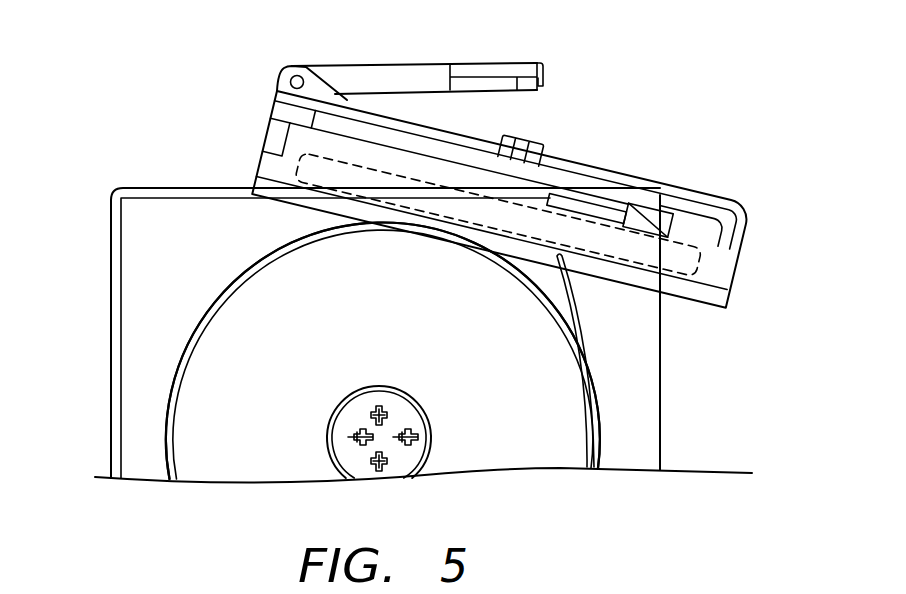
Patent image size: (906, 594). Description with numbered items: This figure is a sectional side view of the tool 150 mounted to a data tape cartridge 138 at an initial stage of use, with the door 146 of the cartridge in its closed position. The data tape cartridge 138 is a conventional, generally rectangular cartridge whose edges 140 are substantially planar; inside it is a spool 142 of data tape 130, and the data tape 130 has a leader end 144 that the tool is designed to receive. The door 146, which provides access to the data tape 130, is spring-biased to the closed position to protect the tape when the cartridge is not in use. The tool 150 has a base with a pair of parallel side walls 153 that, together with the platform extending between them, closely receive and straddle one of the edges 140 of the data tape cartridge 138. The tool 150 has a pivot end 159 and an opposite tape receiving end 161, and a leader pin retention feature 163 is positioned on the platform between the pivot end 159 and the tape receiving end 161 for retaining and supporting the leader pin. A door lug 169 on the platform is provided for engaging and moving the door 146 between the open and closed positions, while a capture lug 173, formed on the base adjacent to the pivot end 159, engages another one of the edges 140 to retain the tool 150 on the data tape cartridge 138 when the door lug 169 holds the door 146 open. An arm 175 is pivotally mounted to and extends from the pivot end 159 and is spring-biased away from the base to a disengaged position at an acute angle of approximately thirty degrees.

The data tape 130 is at (226, 291).
The data tape cartridge 138 is at (112, 326).
The edges 140 is at (154, 188).
The spool 142 is at (278, 274).
The leader end 144 is at (566, 300).
The door 146 is at (633, 200).
The tool 150 is at (510, 162).
The side walls 153 is at (262, 188).
The pivot end 159 is at (289, 71).
The tape receiving end 161 is at (748, 230).
The leader pin retention feature 163 is at (540, 149).
The door lug 169 is at (668, 207).
The capture lug 173 is at (268, 125).
The arm 175 is at (418, 63).